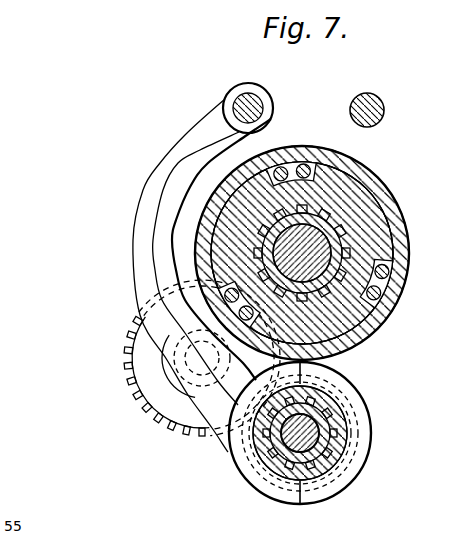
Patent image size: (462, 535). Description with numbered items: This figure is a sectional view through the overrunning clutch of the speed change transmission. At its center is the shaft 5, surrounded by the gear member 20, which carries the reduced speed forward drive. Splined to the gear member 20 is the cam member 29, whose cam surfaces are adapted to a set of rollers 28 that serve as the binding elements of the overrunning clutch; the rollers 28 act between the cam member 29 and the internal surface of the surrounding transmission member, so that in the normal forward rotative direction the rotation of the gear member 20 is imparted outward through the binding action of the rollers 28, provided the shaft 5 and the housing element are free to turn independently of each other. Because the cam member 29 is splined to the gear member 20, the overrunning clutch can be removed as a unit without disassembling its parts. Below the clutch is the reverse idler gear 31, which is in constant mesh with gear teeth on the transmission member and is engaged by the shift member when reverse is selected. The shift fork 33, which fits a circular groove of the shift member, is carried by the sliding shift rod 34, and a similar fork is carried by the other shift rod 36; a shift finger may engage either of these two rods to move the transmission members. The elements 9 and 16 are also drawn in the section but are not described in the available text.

The shaft 5 is at (331, 249).
The shaft 9 is at (338, 457).
The sleeve 16 is at (325, 430).
The gear member 20 is at (337, 212).
The rollers 28 is at (308, 168).
The cam member 29 is at (358, 344).
The reverse idler gear 31 is at (163, 393).
The shift fork 33 is at (143, 222).
The sliding shift rod 34 is at (246, 95).
The shift rod 36 is at (382, 102).